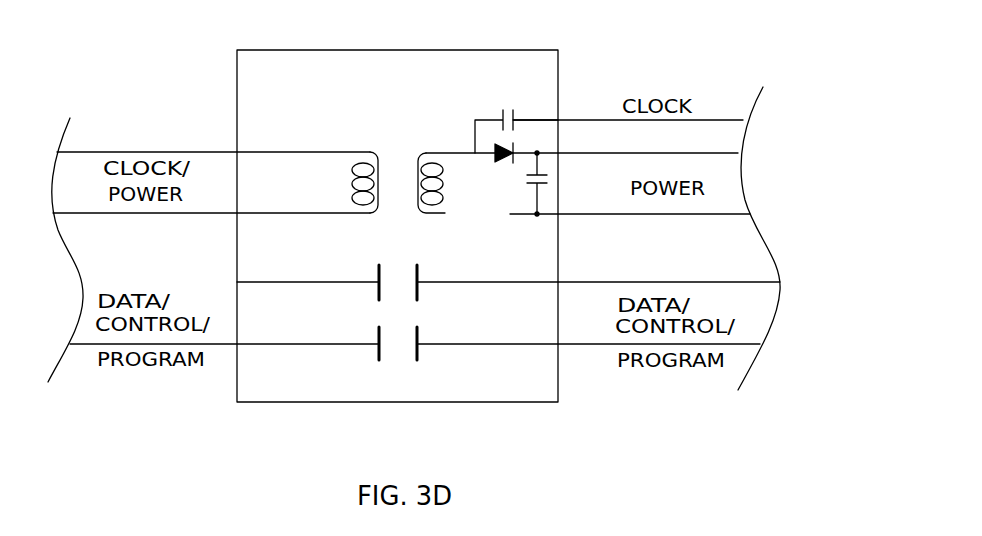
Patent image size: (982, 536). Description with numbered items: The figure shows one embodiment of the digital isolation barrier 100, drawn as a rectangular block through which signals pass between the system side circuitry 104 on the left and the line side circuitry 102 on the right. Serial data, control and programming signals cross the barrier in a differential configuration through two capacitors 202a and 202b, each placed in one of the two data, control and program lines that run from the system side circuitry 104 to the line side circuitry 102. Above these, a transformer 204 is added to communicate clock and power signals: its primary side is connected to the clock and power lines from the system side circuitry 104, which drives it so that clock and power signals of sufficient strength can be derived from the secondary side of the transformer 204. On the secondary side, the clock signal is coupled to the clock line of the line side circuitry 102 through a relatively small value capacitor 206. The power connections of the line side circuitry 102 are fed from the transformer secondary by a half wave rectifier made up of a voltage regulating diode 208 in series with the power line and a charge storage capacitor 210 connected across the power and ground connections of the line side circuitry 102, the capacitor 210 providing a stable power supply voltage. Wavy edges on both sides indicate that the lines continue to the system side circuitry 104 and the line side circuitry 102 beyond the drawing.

The digital isolation barrier 100 is at (480, 50).
The line side circuitry 102 is at (784, 238).
The system side circuitry 104 is at (46, 250).
The capacitor 202a is at (417, 293).
The capacitor 202b is at (417, 353).
The transformer 204 is at (395, 208).
The capacitor 206 is at (515, 118).
The voltage regulating diode 208 is at (503, 164).
The charge storage capacitor 210 is at (527, 183).